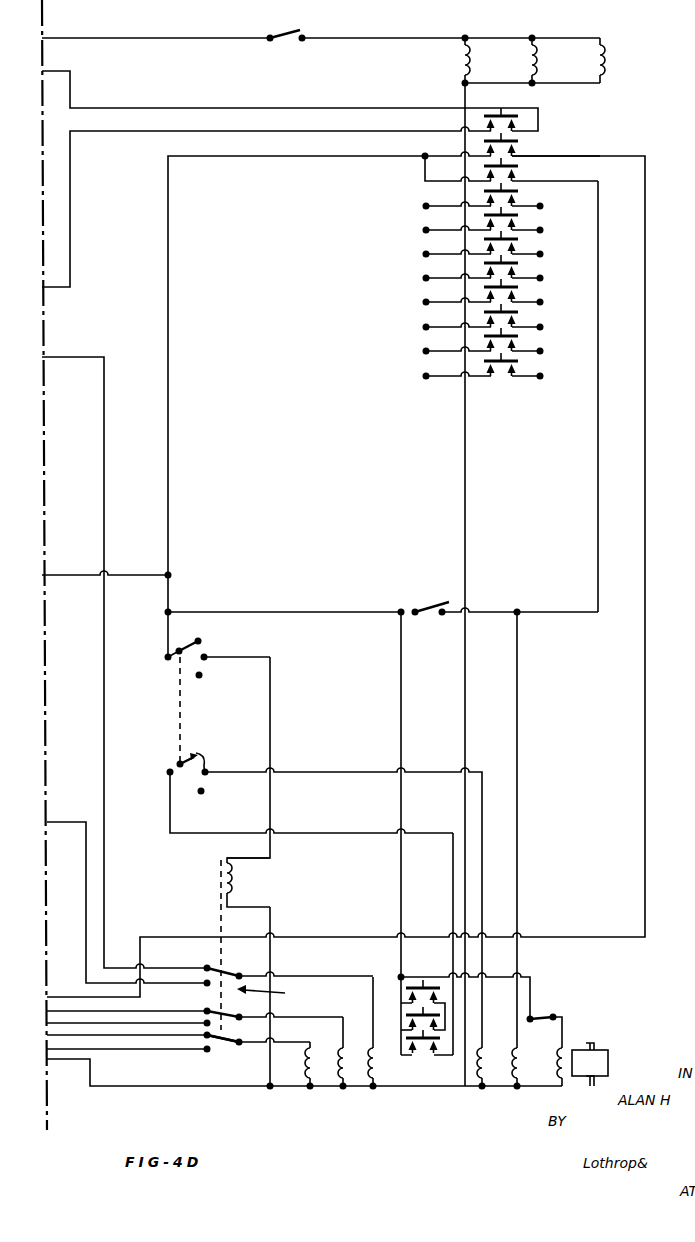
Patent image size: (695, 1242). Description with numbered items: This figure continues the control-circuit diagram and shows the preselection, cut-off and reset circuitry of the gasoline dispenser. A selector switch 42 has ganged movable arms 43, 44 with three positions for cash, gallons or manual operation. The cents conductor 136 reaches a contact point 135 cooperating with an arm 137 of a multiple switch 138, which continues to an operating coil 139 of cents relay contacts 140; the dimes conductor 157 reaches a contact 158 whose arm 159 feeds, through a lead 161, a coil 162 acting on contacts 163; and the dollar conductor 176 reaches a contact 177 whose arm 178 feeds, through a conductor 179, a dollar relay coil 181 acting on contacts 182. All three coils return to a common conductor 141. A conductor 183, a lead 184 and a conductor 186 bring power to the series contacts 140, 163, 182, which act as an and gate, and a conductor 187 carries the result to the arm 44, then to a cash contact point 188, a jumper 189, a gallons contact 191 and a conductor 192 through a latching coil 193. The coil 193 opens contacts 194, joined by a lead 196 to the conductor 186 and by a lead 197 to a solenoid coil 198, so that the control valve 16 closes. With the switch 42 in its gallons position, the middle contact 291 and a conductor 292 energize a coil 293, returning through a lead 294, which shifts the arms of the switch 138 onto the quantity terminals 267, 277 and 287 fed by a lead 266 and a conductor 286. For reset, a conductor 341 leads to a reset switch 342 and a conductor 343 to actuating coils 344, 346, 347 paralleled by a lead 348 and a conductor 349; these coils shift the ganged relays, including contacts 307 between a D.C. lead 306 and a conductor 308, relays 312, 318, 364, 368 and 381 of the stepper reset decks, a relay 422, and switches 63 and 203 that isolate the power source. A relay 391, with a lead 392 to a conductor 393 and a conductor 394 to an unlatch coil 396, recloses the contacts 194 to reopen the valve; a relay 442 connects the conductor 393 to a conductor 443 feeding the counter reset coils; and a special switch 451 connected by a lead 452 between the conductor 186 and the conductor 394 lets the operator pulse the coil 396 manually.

The conductor 341 is at (132, 36).
The reset switch 342 is at (306, 35).
The conductor 343 is at (410, 38).
The actuating coil 344 is at (450, 70).
The actuating coil 346 is at (526, 70).
The lead 348 is at (580, 77).
The actuating coil 347 is at (610, 69).
The conductor 349 is at (456, 93).
The D.C. voltage lead 306 is at (151, 106).
The conductor 308 is at (185, 130).
The relay contacts 307 is at (534, 119).
The relay 442 is at (516, 147).
The relay 391 is at (516, 171).
The switch 63 is at (524, 194).
The switch 203 is at (524, 219).
The relay 422 is at (524, 243).
The relay 318 is at (524, 269).
The relay 312 is at (524, 293).
The relay 364 is at (524, 318).
The relay 368 is at (524, 342).
The relay 381 is at (524, 367).
The conductor 393 is at (168, 317).
The lead 392 is at (416, 182).
The conductor 394 is at (598, 558).
The conductor 443 is at (652, 424).
The conductor 176 is at (65, 356).
The conductor 183 is at (86, 568).
The lead 184 is at (168, 607).
The conductor 186 is at (288, 612).
The special switch 451 is at (436, 602).
The lead 452 is at (500, 610).
The movable arm 43 is at (190, 646).
The middle contact 291 is at (203, 656).
The conductor 292 is at (270, 709).
The selector switch 42 is at (174, 711).
The movable arm 44 is at (174, 768).
The cash contact point 188 is at (196, 753).
The jumper 189 is at (206, 770).
The conductor 192 is at (352, 768).
The gallons contact 191 is at (208, 774).
The conductor 286 is at (90, 800).
The coil 293 is at (240, 885).
The lead 294 is at (272, 924).
The conductor 187 is at (450, 903).
The relay contacts 182 is at (410, 988).
The contacts 163 is at (410, 1015).
The cents relay contacts 140 is at (422, 1060).
The lead 196 is at (448, 975).
The contacts 194 is at (536, 1012).
The lead 197 is at (556, 1034).
The solenoid coil 198 is at (598, 1050).
The control valve 16 is at (608, 1052).
The unlatch coil 396 is at (516, 1086).
The latching relay coil 193 is at (494, 1074).
The operating coil 139 is at (302, 1078).
The actuating coil 162 is at (336, 1076).
The dollar relay coil 181 is at (368, 1076).
The lead 161 is at (316, 1022).
The switch arm 159 is at (229, 1014).
The conductor 179 is at (288, 972).
The switch arm 178 is at (226, 974).
The contact 177 is at (204, 966).
The contact point 287 is at (204, 984).
The conductor 157 is at (70, 1006).
The contact 158 is at (204, 1007).
The multiple switch 138 is at (265, 945).
The contact point 135 is at (216, 1038).
The switch arm 137 is at (210, 1046).
The contact point 277 is at (207, 1024).
The conductor 136 is at (82, 1036).
The lead 266 is at (116, 1050).
The contact point 267 is at (206, 1051).
The conductor 141 is at (172, 1088).